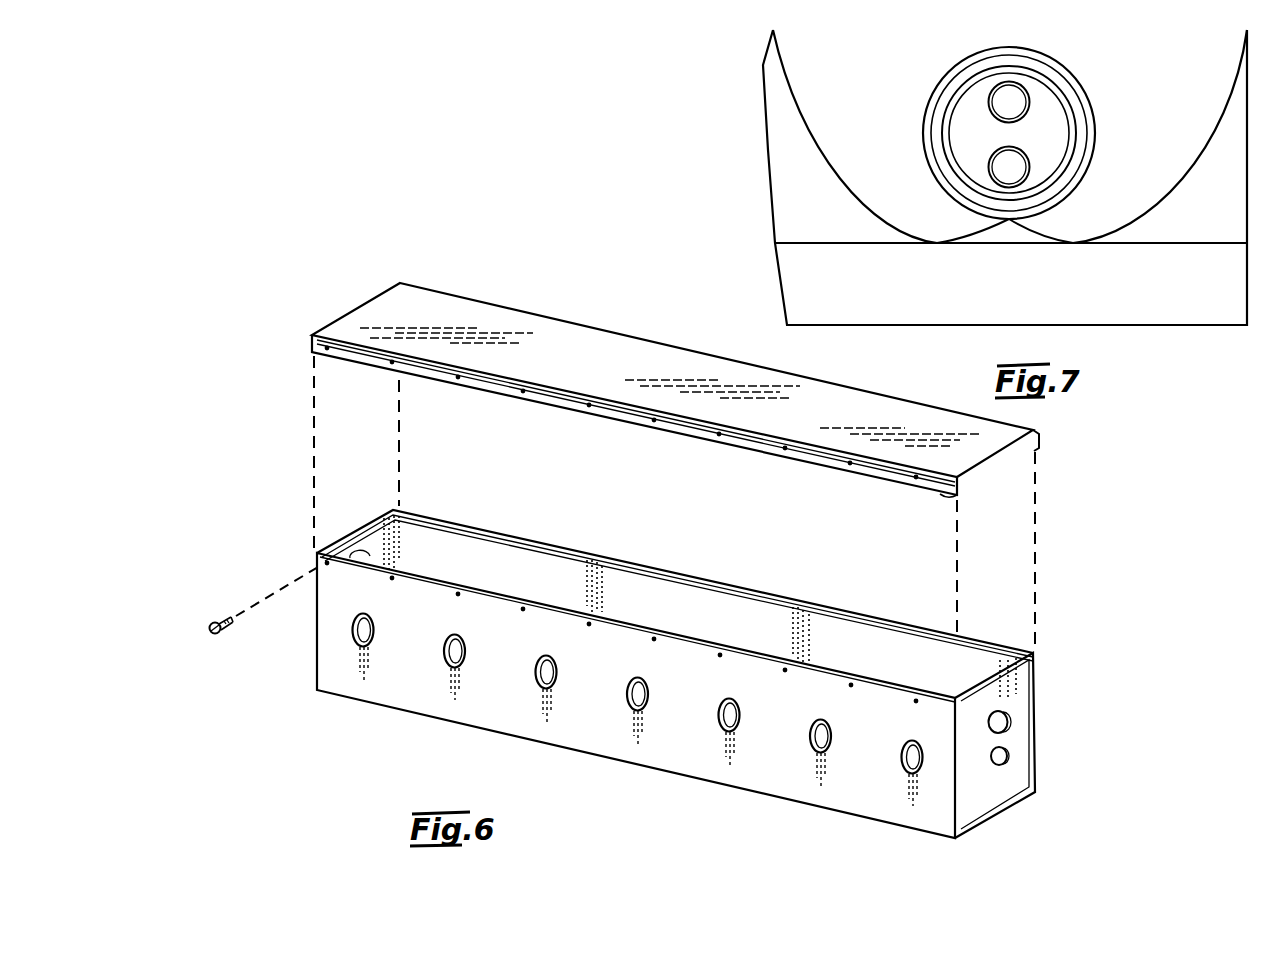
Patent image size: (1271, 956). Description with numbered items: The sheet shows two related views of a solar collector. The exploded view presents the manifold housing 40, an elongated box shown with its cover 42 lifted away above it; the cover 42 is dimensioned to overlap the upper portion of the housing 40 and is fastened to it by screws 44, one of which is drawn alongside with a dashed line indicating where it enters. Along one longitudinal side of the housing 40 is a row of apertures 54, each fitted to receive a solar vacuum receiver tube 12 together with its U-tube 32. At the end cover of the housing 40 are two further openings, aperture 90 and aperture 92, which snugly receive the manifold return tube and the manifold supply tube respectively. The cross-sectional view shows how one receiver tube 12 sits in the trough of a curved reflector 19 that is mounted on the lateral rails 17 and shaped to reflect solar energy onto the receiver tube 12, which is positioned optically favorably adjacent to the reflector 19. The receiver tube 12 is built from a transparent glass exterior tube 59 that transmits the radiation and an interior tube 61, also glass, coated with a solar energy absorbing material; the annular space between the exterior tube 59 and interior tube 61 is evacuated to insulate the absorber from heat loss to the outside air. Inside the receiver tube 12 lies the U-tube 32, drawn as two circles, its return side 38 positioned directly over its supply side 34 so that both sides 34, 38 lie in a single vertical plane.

In FIG. 7, the solar energy receiver tube 12 is at (932, 78).
In FIG. 7, the lateral rail 17 is at (1170, 297).
In FIG. 7, the reflector 19 is at (1197, 148).
In FIG. 7, the U-tube 32 is at (1031, 92).
In FIG. 7, the supply side 34 is at (1030, 172).
In FIG. 7, the return side 38 is at (1030, 103).
In FIG. 6, the manifold housing 40 is at (848, 778).
In FIG. 6, the cover 42 is at (650, 358).
In FIG. 6, the screw 44 is at (209, 627).
In FIG. 6, the aperture 54 is at (625, 699).
In FIG. 7, the exterior tube 59 is at (957, 67).
In FIG. 7, the interior tube 61 is at (1037, 79).
In FIG. 6, the aperture 90 is at (1006, 713).
In FIG. 6, the aperture 92 is at (1010, 753).